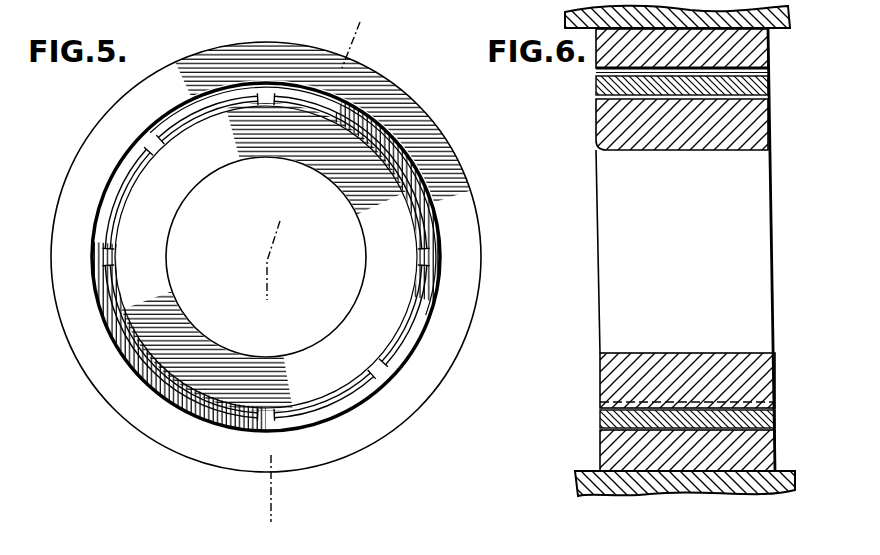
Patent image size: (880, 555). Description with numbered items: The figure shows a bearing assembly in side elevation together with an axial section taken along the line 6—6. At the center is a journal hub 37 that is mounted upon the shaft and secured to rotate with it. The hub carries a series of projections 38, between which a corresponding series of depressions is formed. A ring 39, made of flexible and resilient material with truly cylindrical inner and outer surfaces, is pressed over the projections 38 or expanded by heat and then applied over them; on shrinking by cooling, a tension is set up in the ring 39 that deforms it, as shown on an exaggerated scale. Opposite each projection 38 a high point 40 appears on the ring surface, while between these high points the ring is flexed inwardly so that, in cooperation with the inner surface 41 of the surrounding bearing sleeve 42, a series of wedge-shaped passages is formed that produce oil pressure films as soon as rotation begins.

In FIG. 5, the journal hub 37 is at (382, 308).
In FIG. 6, the journal hub 37 is at (643, 132).
In FIG. 5, the projections 38 is at (383, 367).
In FIG. 6, the projections 38 is at (608, 402).
In FIG. 5, the ring 39 is at (425, 303).
In FIG. 6, the ring 39 is at (608, 88).
In FIG. 5, the high point 40 is at (442, 255).
In FIG. 5, the inner surface 41 is at (430, 185).
In FIG. 6, the inner surface 41 is at (769, 71).
In FIG. 5, the bearing sleeve 42 is at (470, 203).
In FIG. 6, the bearing sleeve 42 is at (606, 59).
In FIG. 5, the section line 6— 6 is at (393, 50).